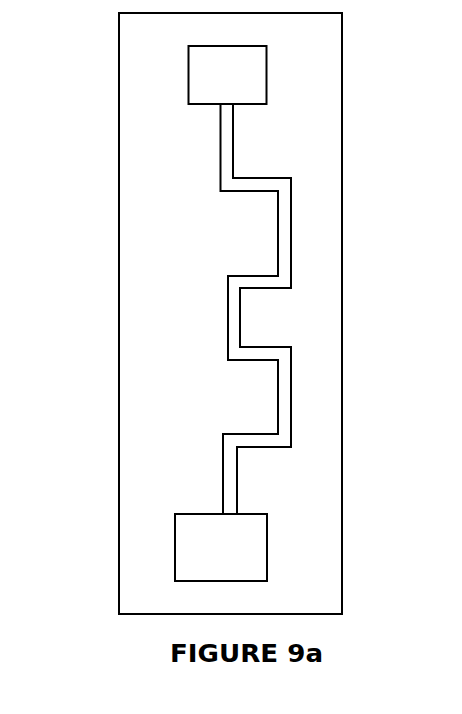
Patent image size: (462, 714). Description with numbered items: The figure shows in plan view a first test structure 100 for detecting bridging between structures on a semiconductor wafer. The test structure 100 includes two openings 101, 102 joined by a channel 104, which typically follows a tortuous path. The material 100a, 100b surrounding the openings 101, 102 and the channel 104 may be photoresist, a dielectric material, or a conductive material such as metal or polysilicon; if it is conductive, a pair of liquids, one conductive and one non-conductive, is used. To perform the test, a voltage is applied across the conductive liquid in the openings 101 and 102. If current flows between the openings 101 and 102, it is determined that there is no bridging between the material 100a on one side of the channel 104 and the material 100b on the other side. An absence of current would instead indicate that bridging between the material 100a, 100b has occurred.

The test structure 100 is at (92, 473).
The material 100a is at (196, 224).
The material 100b is at (313, 222).
The opening 101 is at (243, 93).
The opening 102 is at (246, 556).
The channel 104 is at (237, 319).